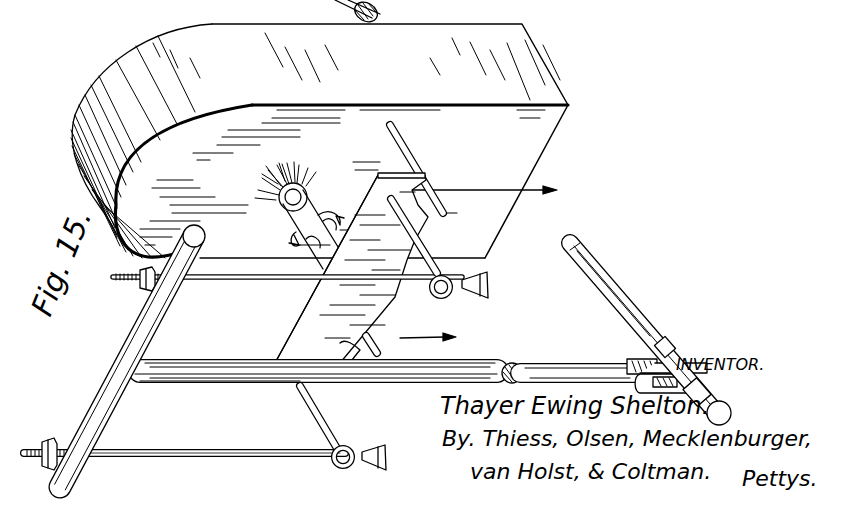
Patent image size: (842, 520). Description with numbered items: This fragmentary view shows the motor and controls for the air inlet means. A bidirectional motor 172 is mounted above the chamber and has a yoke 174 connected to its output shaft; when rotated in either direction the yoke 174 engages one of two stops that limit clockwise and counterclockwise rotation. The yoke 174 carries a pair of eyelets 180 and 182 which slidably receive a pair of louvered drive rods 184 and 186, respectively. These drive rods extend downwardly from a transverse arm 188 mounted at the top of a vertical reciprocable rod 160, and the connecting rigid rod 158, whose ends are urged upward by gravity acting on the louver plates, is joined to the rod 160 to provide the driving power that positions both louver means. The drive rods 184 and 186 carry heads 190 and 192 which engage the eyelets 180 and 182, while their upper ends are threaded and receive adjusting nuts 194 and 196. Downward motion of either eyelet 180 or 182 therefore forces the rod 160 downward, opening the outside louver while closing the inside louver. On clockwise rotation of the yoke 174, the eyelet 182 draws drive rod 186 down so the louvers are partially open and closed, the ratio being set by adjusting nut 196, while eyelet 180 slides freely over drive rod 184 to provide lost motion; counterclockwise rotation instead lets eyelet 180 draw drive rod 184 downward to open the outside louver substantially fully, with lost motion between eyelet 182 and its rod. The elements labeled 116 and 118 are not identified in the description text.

The bidirectional motor 172 is at (208, 133).
The yoke 174 is at (373, 227).
The rod 116 is at (410, 150).
The eyelet 182 is at (428, 256).
The head 192 is at (489, 283).
The adjusting nut 196 is at (140, 273).
The louvered drive rod 186 is at (272, 280).
The pin 118 is at (385, 350).
The connecting rigid rod 158 is at (608, 282).
The transverse arm 188 is at (88, 425).
The adjusting nut 194 is at (48, 443).
The louvered drive rod 184 is at (180, 450).
The eyelet 180 is at (285, 428).
The head 190 is at (378, 448).
The vertical reciprocable rod 160 is at (407, 380).